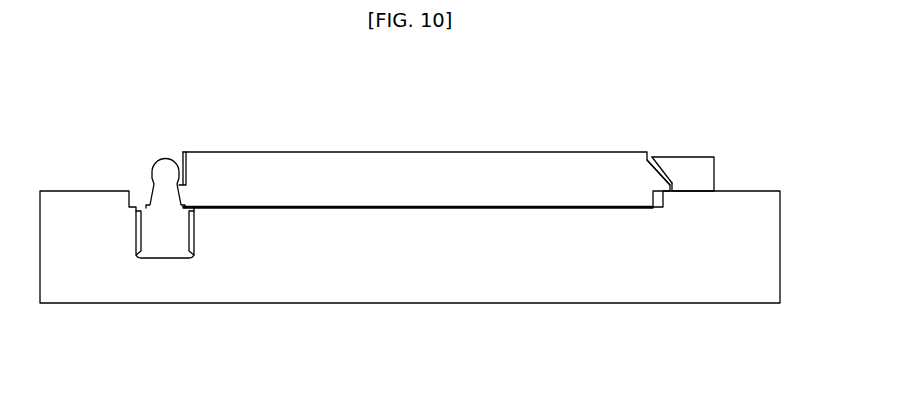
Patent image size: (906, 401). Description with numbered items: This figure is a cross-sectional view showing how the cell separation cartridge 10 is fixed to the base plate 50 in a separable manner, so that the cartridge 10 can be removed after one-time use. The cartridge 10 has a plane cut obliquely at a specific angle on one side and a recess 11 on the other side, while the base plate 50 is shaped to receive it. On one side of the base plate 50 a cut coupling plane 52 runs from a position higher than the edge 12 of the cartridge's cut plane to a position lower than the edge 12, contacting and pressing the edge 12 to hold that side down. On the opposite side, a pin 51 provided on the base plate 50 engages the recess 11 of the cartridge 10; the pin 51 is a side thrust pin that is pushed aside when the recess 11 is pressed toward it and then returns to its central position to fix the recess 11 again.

The cartridge 10 is at (634, 172).
The recess 11 is at (180, 152).
The edge 12 is at (680, 170).
The base plate 50 is at (740, 240).
The pin 51 is at (160, 178).
The coupling plane 52 is at (664, 178).